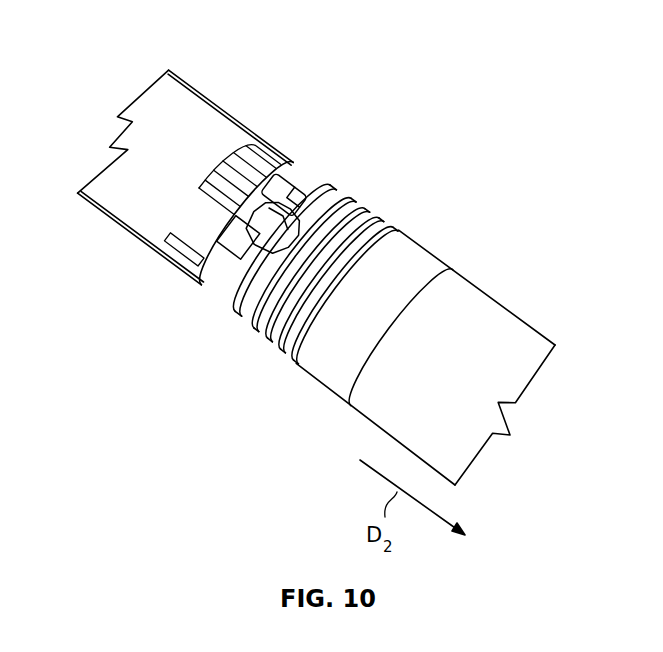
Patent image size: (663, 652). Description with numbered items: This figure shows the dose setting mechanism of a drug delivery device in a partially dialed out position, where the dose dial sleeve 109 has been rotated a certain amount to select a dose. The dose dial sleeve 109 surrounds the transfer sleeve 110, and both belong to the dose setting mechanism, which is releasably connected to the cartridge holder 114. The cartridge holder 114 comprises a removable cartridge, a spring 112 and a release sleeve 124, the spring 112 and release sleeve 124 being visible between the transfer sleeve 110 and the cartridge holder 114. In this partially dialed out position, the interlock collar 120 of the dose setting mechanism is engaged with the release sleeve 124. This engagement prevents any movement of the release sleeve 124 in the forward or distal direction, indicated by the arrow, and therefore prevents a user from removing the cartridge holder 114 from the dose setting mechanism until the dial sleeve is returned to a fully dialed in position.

The dose dial sleeve 109 is at (179, 172).
The transfer sleeve 110 is at (203, 128).
The spring 112 is at (280, 350).
The cartridge holder 114 is at (505, 348).
The interlock collar 120 is at (293, 187).
The release sleeve 124 is at (317, 187).